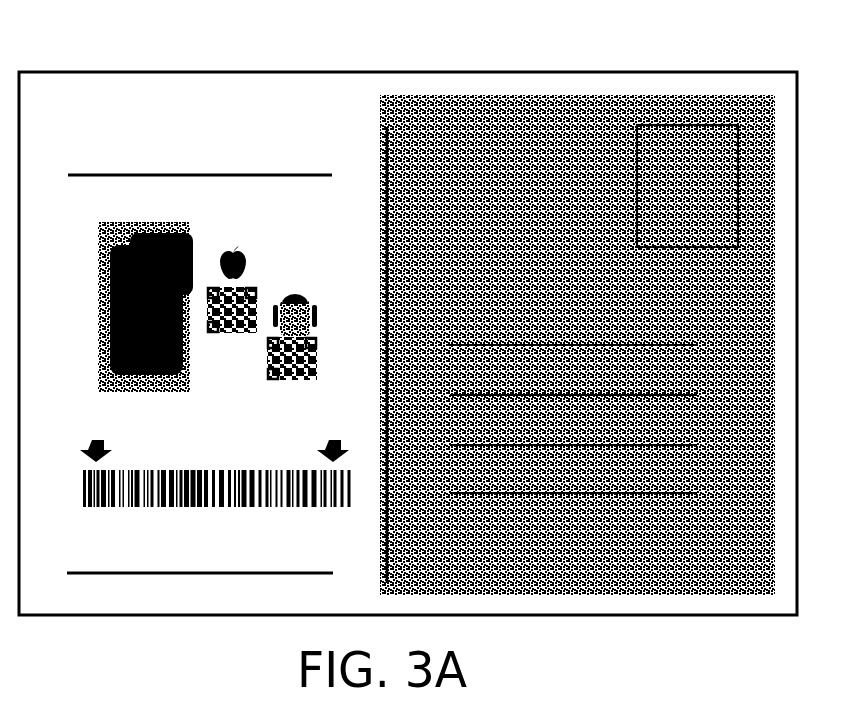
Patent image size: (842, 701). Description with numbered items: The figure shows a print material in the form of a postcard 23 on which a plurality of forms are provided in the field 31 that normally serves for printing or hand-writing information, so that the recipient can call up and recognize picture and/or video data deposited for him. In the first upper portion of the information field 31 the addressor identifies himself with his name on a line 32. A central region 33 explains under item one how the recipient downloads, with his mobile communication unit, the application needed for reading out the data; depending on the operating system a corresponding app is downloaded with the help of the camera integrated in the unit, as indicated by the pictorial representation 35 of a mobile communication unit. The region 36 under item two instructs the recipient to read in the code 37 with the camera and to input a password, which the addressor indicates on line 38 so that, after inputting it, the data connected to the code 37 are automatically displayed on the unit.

The postcard 23 is at (732, 70).
The information field 31 is at (64, 100).
The line 32 is at (320, 172).
The central region 33 is at (320, 235).
The pictorial representation of a mobile communication unit 35 is at (112, 315).
The region 36 is at (63, 505).
The code 37 is at (325, 507).
The line 38 is at (300, 573).